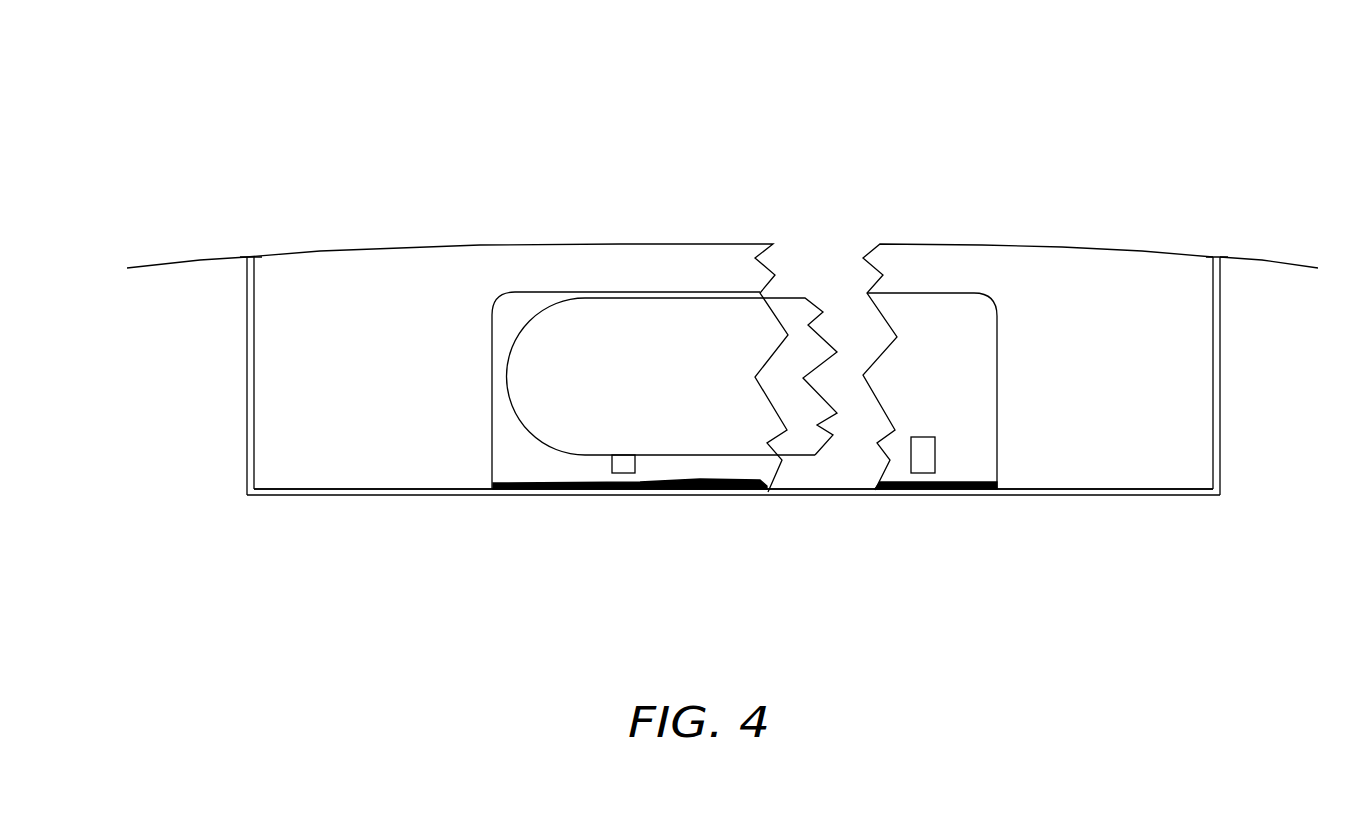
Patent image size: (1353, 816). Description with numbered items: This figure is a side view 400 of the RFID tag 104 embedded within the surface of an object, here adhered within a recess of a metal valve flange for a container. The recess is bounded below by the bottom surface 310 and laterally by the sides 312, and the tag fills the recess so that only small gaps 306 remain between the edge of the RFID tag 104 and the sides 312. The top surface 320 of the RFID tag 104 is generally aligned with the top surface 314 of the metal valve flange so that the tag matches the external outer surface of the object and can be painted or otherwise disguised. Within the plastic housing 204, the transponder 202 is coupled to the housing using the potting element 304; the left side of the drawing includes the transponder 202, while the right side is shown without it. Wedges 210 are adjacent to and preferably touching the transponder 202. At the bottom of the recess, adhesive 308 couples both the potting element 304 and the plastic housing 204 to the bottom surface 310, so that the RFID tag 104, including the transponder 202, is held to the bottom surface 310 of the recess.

The side view 400 is at (910, 90).
The RFID tag 104 is at (1218, 405).
The transponder 202 is at (657, 386).
The plastic housing 204 is at (918, 268).
The wedge 210 is at (627, 472).
The potting element 304 is at (508, 462).
The gap 306 is at (245, 246).
The adhesive 308 is at (337, 495).
The bottom surface 310 is at (1010, 495).
The sides 312 is at (247, 375).
The top surface 314 is at (198, 258).
The top surface 320 is at (680, 243).